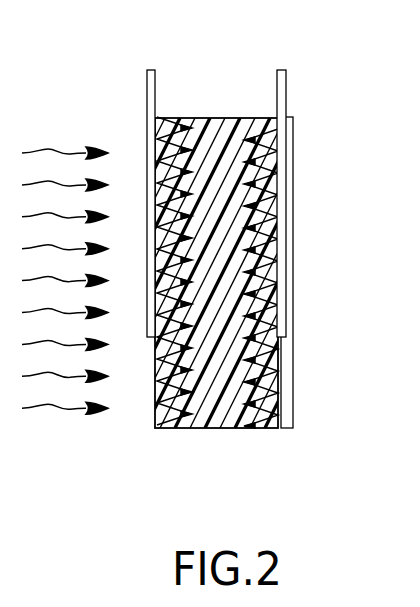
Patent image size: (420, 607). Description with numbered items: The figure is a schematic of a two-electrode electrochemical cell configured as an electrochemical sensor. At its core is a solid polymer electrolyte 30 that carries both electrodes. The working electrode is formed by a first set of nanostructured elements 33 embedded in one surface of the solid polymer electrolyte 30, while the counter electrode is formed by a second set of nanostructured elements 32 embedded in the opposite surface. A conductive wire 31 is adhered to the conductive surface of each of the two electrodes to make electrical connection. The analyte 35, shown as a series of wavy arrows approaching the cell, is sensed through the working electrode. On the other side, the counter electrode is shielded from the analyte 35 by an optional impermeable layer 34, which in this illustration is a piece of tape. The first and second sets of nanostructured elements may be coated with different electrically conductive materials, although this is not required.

The solid polymer electrolyte 30 is at (230, 412).
The conductive wire 31 is at (277, 92).
The second set of nanostructured elements 32 is at (158, 408).
The first set of nanostructured elements 33 is at (260, 402).
The impermeable layer 34 is at (287, 362).
The analyte 35 is at (67, 243).